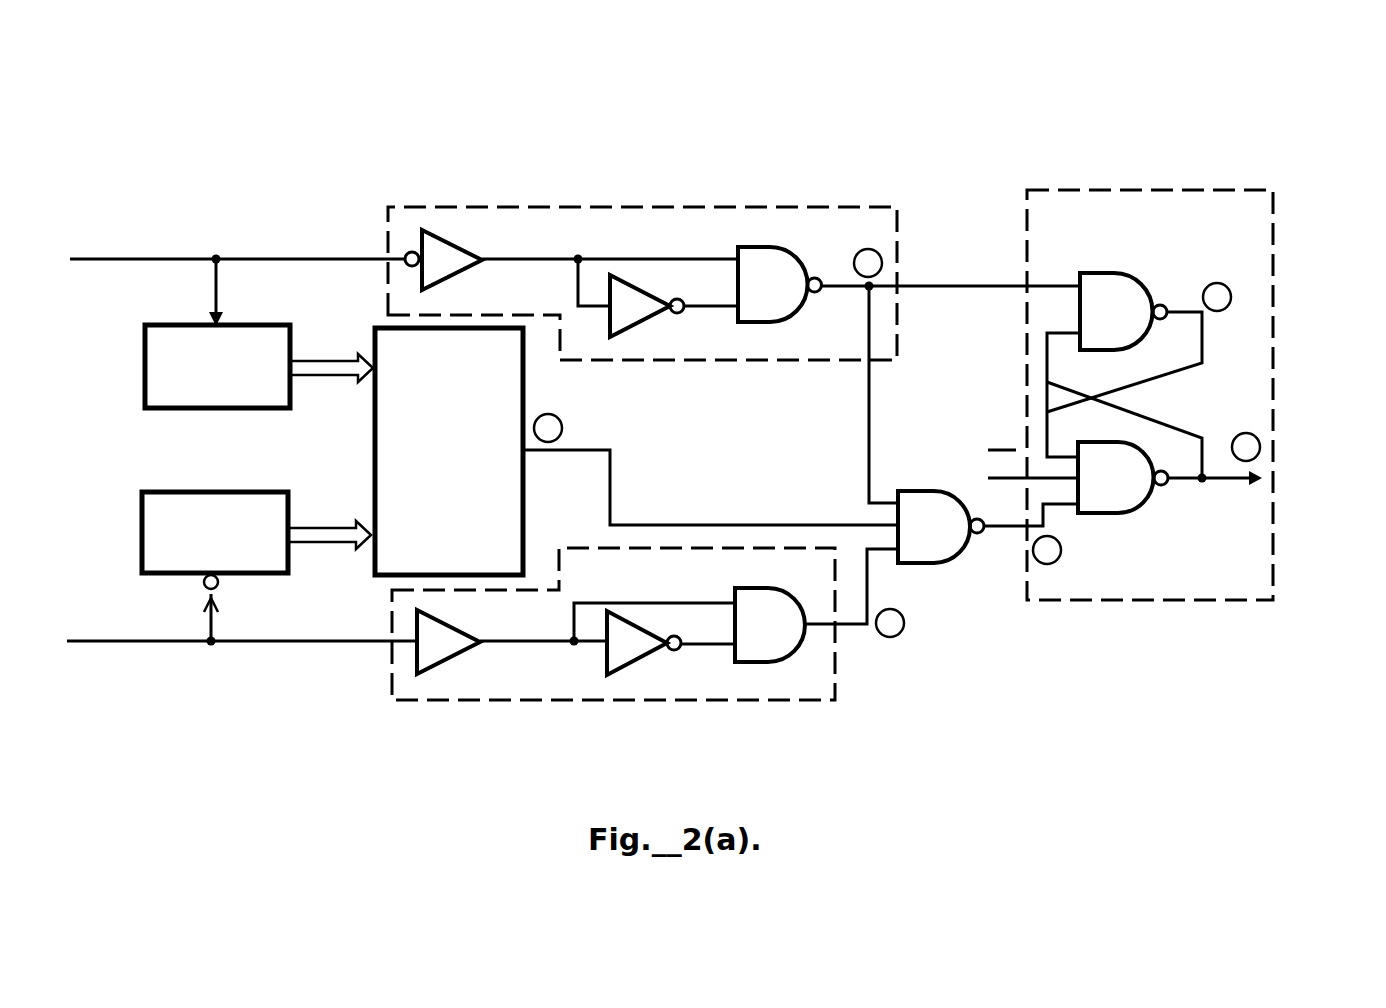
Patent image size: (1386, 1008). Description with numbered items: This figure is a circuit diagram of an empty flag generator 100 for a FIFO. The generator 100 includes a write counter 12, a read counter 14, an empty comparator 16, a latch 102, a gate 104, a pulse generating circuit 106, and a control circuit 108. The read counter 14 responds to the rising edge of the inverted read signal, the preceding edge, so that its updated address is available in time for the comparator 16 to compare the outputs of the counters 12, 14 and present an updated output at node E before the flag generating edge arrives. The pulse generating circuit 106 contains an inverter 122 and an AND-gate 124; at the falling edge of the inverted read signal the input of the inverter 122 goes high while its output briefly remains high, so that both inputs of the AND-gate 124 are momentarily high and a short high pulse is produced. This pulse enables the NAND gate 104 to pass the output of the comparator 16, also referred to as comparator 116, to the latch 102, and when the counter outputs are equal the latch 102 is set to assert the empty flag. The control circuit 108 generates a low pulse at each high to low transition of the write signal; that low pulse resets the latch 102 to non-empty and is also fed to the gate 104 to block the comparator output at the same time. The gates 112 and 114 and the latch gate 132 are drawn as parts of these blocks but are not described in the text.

The empty flag generator 100 is at (238, 136).
The write counter 12 is at (145, 360).
The read counter 14 is at (142, 531).
The empty comparator 16 is at (373, 437).
The latch 102 is at (1120, 190).
The gate 104 is at (920, 565).
The pulse generating circuit 106 is at (535, 700).
The control circuit 108 is at (612, 207).
The NAND gate 112 is at (768, 247).
The delay inverter 114 is at (628, 336).
The comparator 116 is at (458, 247).
The inverter 122 is at (607, 665).
The AND-gate 124 is at (796, 647).
The latch NAND gate 132 is at (1140, 505).